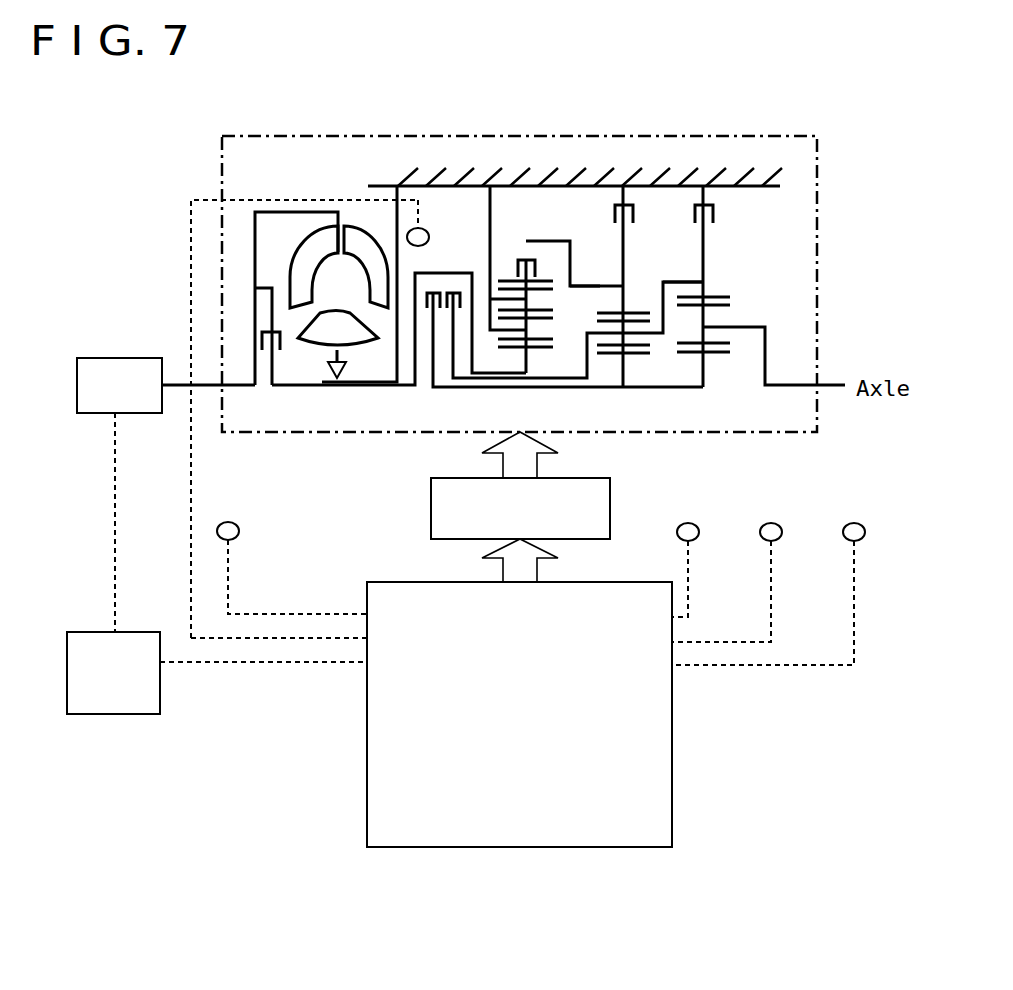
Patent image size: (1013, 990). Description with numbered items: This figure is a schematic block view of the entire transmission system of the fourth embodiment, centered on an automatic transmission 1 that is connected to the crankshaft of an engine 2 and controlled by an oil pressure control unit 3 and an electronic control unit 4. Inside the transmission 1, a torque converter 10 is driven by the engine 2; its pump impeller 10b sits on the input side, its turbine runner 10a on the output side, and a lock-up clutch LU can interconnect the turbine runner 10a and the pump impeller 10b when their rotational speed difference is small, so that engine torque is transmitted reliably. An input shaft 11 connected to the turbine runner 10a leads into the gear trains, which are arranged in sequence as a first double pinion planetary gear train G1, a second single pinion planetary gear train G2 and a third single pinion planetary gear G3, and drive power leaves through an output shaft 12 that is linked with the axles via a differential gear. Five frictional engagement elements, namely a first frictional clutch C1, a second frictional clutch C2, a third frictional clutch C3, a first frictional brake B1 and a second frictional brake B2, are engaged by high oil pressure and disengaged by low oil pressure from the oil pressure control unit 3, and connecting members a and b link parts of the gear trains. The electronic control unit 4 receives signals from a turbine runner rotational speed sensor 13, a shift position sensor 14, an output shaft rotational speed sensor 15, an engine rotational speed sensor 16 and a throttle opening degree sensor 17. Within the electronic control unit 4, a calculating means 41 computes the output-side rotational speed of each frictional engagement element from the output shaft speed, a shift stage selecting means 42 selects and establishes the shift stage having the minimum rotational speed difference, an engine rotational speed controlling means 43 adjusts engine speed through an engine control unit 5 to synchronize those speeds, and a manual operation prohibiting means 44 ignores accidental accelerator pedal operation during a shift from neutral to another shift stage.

The automatic transmission 1 is at (817, 263).
The engine 2 is at (114, 357).
The oil pressure control unit 3 is at (596, 478).
The electronic control unit 4 is at (431, 523).
The engine control unit 5 is at (135, 632).
The torque converter 10 is at (326, 278).
The turbine runner 10a is at (305, 252).
The pump impeller 10b is at (366, 259).
The input shaft 11 is at (305, 386).
The output shaft 12 is at (790, 388).
The turbine runner rotational speed sensor 13 is at (429, 233).
The shift position sensor 14 is at (697, 521).
The output shaft rotational speed sensor 15 is at (861, 521).
The engine rotational speed sensor 16 is at (236, 521).
The throttle opening degree sensor 17 is at (779, 521).
The calculating means 41 is at (496, 657).
The shift stage selecting means 42 is at (486, 701).
The engine rotational speed controlling means 43 is at (518, 756).
The manual operation prohibiting means 44 is at (500, 810).
The lock-up clutch LU is at (262, 340).
The first frictional clutch C1 is at (430, 292).
The second frictional clutch C2 is at (457, 292).
The third frictional clutch C3 is at (517, 262).
The first frictional brake B1 is at (615, 214).
The second frictional brake B2 is at (695, 214).
The first double pinion planetary gear train G1 is at (561, 303).
The second single pinion planetary gear train G2 is at (635, 307).
The third single pinion planetary gear G3 is at (719, 292).
The connecting member a is at (683, 282).
The connecting member b is at (592, 286).